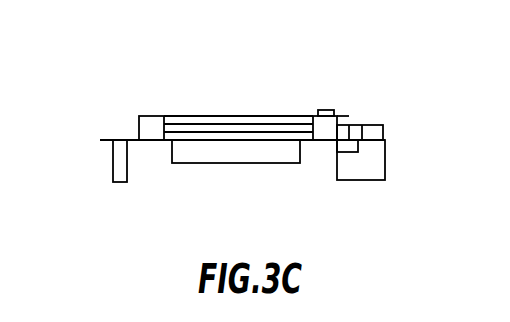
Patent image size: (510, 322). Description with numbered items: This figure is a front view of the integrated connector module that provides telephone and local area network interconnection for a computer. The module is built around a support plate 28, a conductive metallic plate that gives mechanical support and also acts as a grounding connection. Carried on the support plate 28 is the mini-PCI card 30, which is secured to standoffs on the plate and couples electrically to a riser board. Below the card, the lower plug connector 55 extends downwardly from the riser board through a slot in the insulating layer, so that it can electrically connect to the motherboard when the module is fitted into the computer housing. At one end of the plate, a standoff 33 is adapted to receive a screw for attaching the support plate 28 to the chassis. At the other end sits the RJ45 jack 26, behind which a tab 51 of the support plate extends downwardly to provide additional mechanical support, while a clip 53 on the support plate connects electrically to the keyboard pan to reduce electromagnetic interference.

The RJ45 jack 26 is at (377, 170).
The support plate 28 is at (378, 122).
The mini-PCI card 30 is at (188, 116).
The standoff 33 is at (113, 163).
The tab 51 is at (352, 147).
The clip 53 is at (362, 110).
The lower plug connector 55 is at (253, 153).